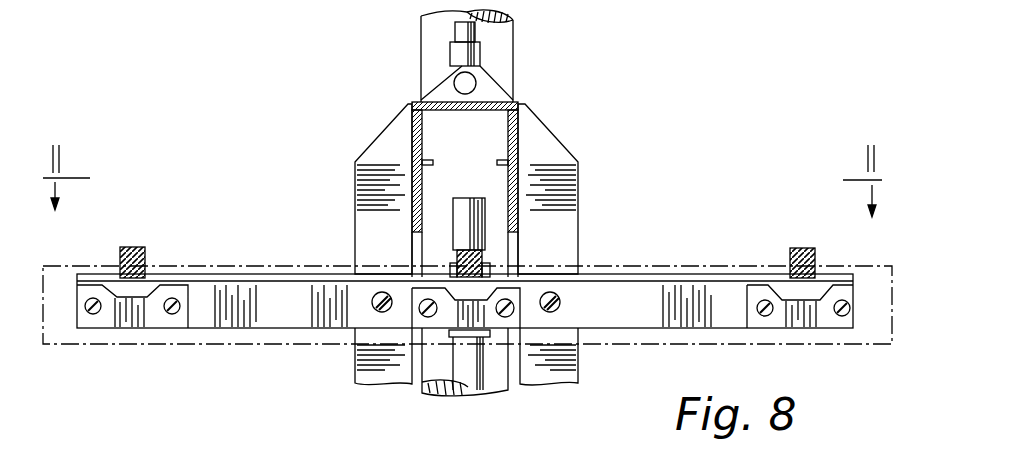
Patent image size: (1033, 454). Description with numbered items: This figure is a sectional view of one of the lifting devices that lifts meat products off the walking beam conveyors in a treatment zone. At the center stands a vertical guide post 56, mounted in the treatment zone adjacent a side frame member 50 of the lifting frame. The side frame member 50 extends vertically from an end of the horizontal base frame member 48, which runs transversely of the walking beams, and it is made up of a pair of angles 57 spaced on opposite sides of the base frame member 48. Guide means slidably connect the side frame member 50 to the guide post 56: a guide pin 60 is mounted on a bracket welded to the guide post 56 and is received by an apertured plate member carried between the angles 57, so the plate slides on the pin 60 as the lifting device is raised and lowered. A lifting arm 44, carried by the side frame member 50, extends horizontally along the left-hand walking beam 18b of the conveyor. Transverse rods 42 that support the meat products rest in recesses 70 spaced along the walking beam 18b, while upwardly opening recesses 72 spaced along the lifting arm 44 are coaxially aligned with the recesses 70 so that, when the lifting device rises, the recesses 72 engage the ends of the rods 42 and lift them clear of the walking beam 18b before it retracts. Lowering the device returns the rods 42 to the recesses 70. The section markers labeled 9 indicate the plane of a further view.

The left-hand walking beam 18b is at (172, 345).
The section line 9- 9 is at (465, 195).
The lifting arm 44 is at (643, 295).
The upwardly opening recess 72 is at (150, 293).
The transverse rod 42 is at (145, 250).
The recess 70 is at (490, 262).
The angle 57 is at (383, 140).
The side frame member 50 is at (565, 215).
The guide pin 60 is at (462, 205).
The vertical guide post 56 is at (500, 45).
The horizontal base frame member 48 is at (485, 106).